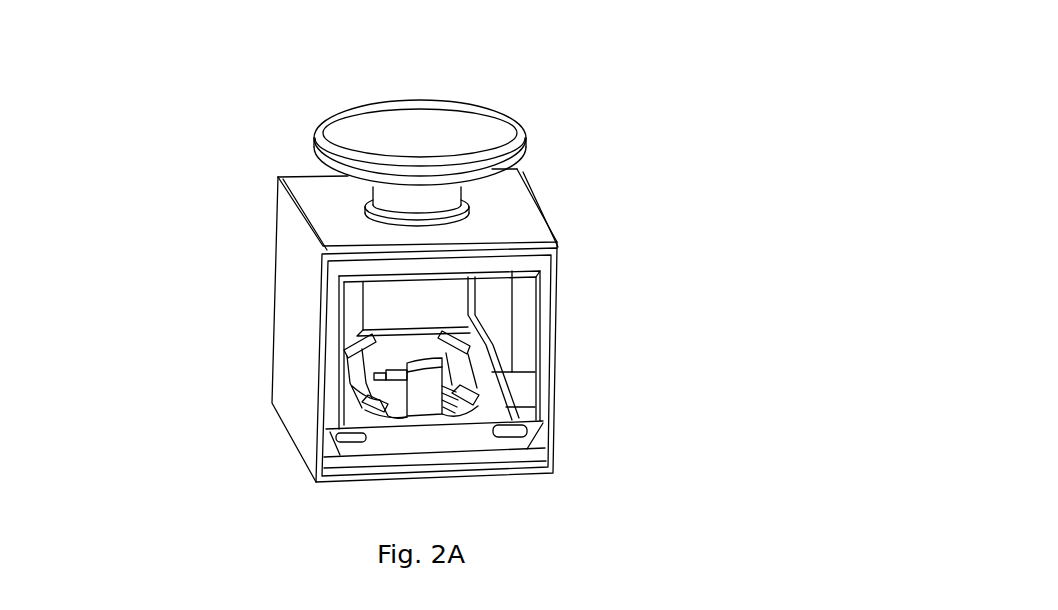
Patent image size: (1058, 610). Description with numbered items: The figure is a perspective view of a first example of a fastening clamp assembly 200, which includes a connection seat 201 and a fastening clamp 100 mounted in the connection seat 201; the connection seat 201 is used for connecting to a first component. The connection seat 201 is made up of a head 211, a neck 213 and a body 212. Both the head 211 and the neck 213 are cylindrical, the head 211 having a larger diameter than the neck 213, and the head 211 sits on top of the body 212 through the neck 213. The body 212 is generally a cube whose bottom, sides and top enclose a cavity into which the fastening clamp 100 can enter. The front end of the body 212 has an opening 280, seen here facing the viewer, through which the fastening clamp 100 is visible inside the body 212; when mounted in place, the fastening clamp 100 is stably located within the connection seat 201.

The fastening clamp assembly 200 is at (615, 190).
The connection seat 201 is at (550, 300).
The head 211 is at (335, 155).
The body 212 is at (290, 335).
The neck 213 is at (376, 197).
The opening 280 is at (517, 345).
The fastening clamp 100 is at (525, 437).